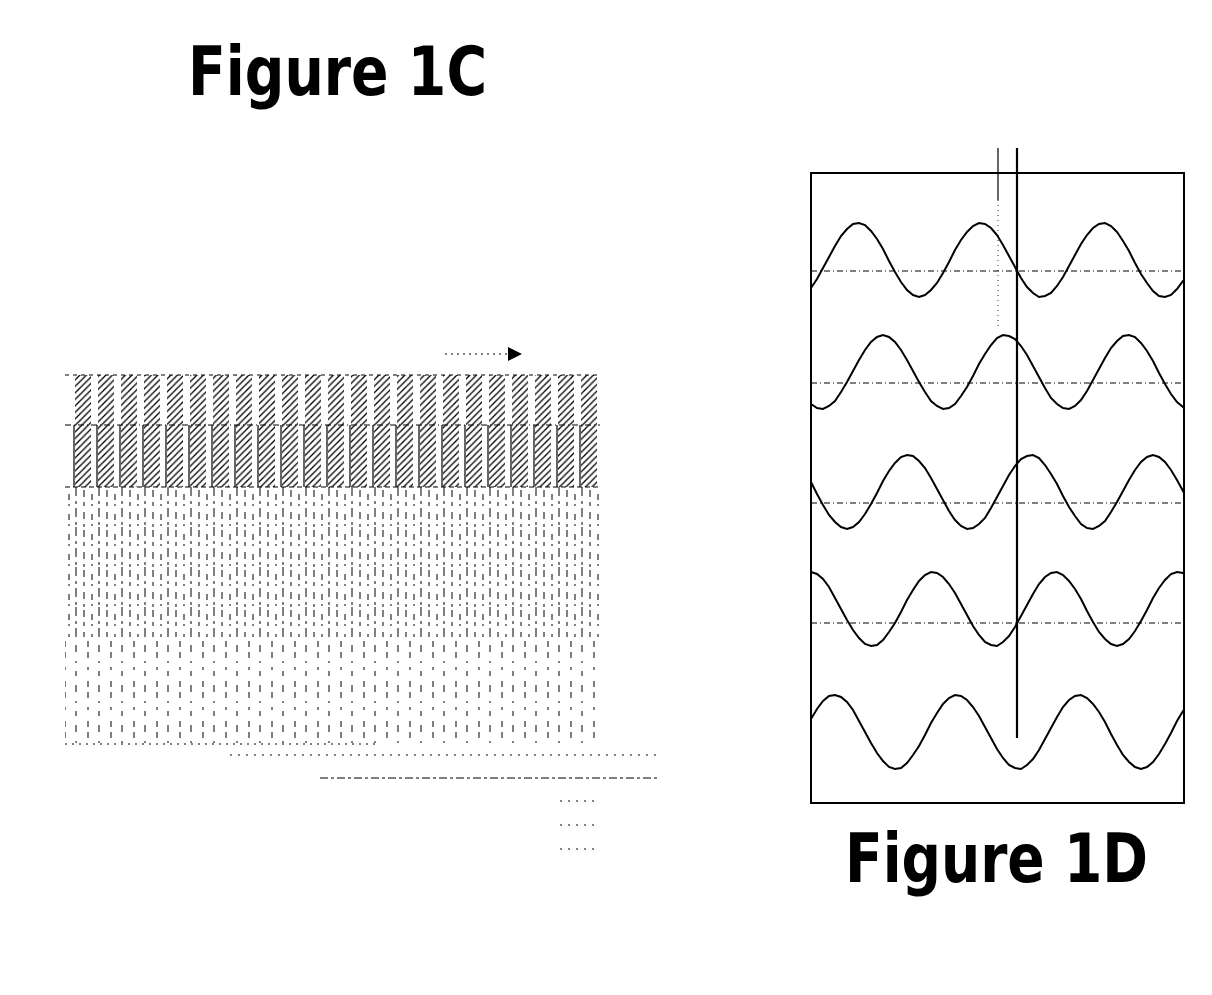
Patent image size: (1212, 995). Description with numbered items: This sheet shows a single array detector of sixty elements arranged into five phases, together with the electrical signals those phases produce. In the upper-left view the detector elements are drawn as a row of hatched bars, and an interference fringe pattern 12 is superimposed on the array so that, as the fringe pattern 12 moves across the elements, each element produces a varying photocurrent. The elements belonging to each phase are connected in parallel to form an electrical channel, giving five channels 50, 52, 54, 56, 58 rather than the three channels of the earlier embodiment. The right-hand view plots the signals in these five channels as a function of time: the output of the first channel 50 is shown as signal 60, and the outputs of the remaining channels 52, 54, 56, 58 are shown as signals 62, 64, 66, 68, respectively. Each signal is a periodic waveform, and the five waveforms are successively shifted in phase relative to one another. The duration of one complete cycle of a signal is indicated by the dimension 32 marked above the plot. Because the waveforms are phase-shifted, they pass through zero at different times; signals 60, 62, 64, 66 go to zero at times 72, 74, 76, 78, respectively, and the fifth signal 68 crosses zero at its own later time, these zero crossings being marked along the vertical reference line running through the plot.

In FIG. 1C, the interference fringe pattern 12 is at (342, 402).
In FIG. 1D, the time of a single cycle of signal 32 is at (1024, 120).
In FIG. 1C, the first channel 50 is at (466, 756).
In FIG. 1C, the second channel 52 is at (511, 779).
In FIG. 1C, the third channel 54 is at (631, 803).
In FIG. 1C, the fourth channel 56 is at (631, 826).
In FIG. 1C, the fifth channel 58 is at (631, 850).
In FIG. 1D, the first channel signal 60 is at (979, 260).
In FIG. 1D, the second channel signal 62 is at (979, 372).
In FIG. 1D, the third channel signal 64 is at (979, 492).
In FIG. 1D, the fourth channel signal 66 is at (979, 609).
In FIG. 1D, the fifth channel signal 68 is at (979, 732).
In FIG. 1D, the zero-crossing time of first channel signal 72 is at (813, 195).
In FIG. 1D, the zero-crossing time of second channel signal 74 is at (958, 100).
In FIG. 1D, the zero-crossing time of third channel signal 76 is at (893, 130).
In FIG. 1D, the zero-crossing time of fourth channel signal 78 is at (1040, 142).